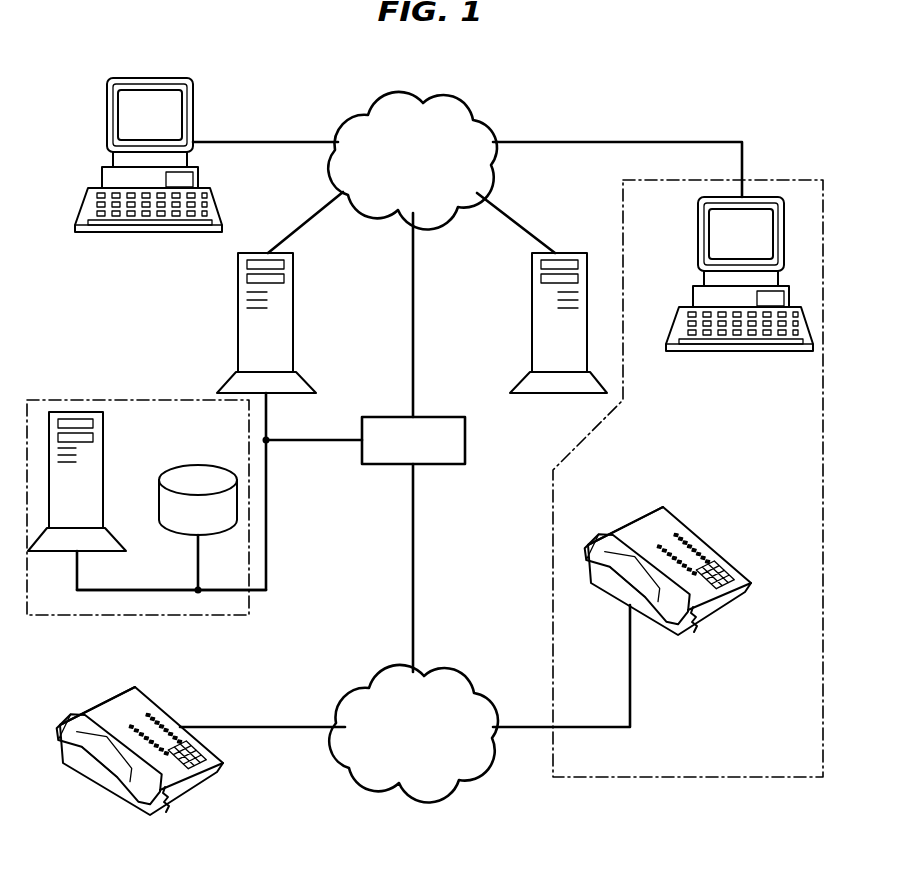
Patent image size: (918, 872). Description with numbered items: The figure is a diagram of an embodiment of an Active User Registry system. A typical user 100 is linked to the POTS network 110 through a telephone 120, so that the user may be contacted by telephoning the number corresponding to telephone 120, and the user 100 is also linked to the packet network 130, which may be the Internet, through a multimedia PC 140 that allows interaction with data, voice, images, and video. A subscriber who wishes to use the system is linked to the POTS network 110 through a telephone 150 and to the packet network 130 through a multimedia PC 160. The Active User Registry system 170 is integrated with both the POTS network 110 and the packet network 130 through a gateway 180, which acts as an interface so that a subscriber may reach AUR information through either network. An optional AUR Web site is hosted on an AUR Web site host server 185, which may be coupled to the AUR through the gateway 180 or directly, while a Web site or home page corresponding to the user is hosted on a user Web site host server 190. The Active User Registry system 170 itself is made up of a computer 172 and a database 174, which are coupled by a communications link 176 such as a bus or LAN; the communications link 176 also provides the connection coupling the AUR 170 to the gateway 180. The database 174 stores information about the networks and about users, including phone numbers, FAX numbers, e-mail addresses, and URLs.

The user 100 is at (780, 180).
The POTS network 110 is at (357, 690).
The telephone 120 is at (722, 553).
The packet network 130 is at (357, 112).
The multimedia PC 140 is at (698, 217).
The telephone 150 is at (108, 698).
The multimedia PC 160 is at (107, 118).
The Active User Registry system 170 is at (76, 617).
The computer 172 is at (100, 412).
The database 174 is at (172, 466).
The communications link 176 is at (143, 590).
The gateway 180 is at (466, 440).
The AUR Web site host server 185 is at (238, 312).
The user Web site host server 190 is at (571, 252).